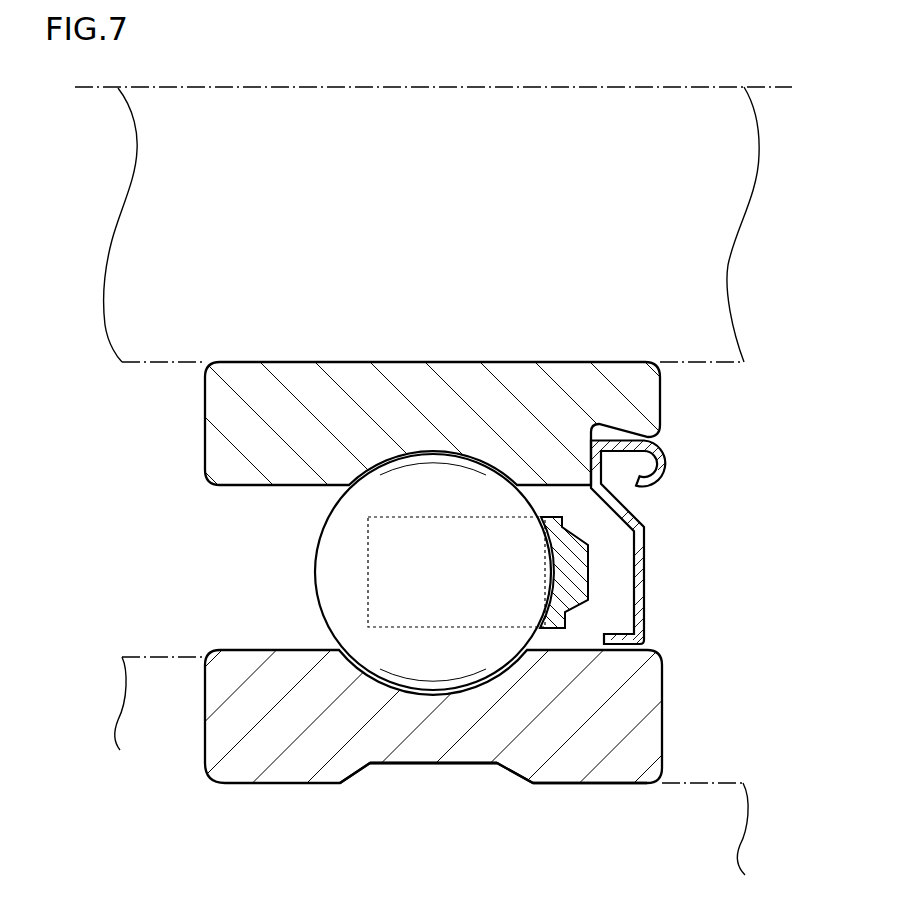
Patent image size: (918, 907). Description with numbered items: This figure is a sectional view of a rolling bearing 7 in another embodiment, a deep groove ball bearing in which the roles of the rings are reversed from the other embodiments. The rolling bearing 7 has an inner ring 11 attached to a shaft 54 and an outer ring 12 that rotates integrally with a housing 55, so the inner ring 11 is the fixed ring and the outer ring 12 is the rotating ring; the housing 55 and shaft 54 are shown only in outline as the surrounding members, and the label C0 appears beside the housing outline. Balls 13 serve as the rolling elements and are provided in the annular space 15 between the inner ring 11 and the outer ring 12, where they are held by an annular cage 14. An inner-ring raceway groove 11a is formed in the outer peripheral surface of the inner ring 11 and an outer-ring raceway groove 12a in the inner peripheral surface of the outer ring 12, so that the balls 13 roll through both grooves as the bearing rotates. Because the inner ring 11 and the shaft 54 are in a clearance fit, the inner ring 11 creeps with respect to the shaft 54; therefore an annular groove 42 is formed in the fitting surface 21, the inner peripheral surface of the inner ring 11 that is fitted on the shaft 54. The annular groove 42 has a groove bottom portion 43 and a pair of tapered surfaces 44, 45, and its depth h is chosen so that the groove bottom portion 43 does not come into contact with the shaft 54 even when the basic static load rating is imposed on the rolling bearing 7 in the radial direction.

The rolling bearing 7 is at (543, 362).
The inner ring 11 is at (640, 690).
The inner-ring raceway groove 11a is at (462, 690).
The outer ring 12 is at (645, 405).
The outer-ring raceway groove 12a is at (400, 453).
The ball 13 is at (463, 484).
The cage 14 is at (590, 552).
The annular space 15 is at (237, 573).
The fitting surface 21 is at (572, 785).
The annular groove 42 is at (398, 764).
The groove bottom portion 43 is at (418, 768).
The tapered surface 44 is at (510, 773).
The tapered surface 45 is at (358, 773).
The shaft 54 is at (728, 780).
The housing 55 is at (137, 363).
The housing C0 is at (770, 88).
The depth h is at (432, 820).